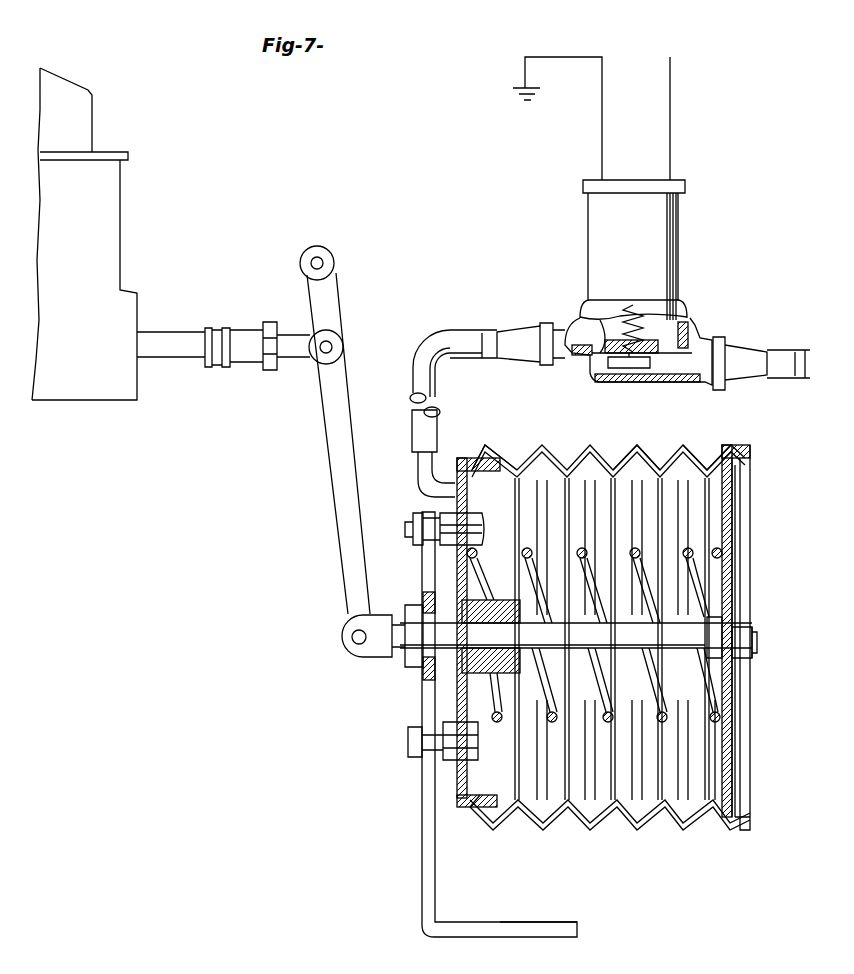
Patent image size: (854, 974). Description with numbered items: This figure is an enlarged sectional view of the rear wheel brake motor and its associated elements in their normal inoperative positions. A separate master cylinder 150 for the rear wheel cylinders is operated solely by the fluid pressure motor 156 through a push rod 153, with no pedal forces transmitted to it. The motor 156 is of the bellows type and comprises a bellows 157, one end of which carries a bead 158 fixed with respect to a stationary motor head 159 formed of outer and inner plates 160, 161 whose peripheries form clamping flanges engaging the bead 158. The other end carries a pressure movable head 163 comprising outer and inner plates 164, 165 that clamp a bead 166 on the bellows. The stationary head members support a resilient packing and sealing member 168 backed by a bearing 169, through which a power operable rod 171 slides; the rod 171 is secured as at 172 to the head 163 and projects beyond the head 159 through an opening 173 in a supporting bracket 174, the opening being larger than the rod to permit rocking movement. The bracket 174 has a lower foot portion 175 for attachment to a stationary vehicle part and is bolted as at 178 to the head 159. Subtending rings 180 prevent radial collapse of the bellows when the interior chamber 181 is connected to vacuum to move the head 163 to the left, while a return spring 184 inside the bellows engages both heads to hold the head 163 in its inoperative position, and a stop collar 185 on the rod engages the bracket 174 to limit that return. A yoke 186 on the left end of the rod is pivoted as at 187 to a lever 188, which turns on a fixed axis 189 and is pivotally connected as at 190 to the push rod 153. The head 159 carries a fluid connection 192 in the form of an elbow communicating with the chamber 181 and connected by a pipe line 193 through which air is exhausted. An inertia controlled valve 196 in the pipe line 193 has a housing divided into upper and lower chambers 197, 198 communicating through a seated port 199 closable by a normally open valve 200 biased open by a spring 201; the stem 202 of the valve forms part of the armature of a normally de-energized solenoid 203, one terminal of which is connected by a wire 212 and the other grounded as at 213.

The master cylinder 150 is at (120, 195).
The push rod 153 is at (166, 338).
The motor 156 is at (556, 452).
The bellows 157 is at (645, 462).
The bead 158 is at (485, 445).
The stationary motor head 159 is at (455, 787).
The outer plate 160 is at (458, 560).
The inner plate 161 is at (480, 795).
The pressure movable head 163 is at (735, 497).
The outer plate 164 is at (740, 518).
The inner plate 165 is at (732, 530).
The bead 166 is at (750, 452).
The packing and sealing member 168 is at (462, 605).
The bearing 169 is at (505, 627).
The power operable rod 171 is at (752, 640).
The securing point 172 is at (735, 622).
The opening 173 is at (440, 672).
The supporting bracket 174 is at (422, 900).
The lower foot portion 175 is at (522, 922).
The bolts 178 is at (410, 528).
The subtending rings 180 is at (712, 462).
The interior chamber 181 is at (730, 755).
The return spring 184 is at (700, 582).
The stop collar 185 is at (408, 662).
The yoke 186 is at (352, 652).
The pivot 187 is at (352, 637).
The lever 188 is at (335, 436).
The fixed axis 189 is at (322, 263).
The pivotal connection 190 is at (331, 345).
The fluid connection 192 is at (425, 478).
The pipe line 193 is at (462, 338).
The inertia controlled valve 196 is at (715, 350).
The upper chamber 197 is at (685, 330).
The lower chamber 198 is at (670, 365).
The seated port 199 is at (647, 340).
The valve 200 is at (630, 370).
The spring 201 is at (600, 320).
The stem 202 is at (633, 320).
The solenoid 203 is at (676, 222).
The wire 212 is at (670, 128).
The ground 213 is at (530, 103).